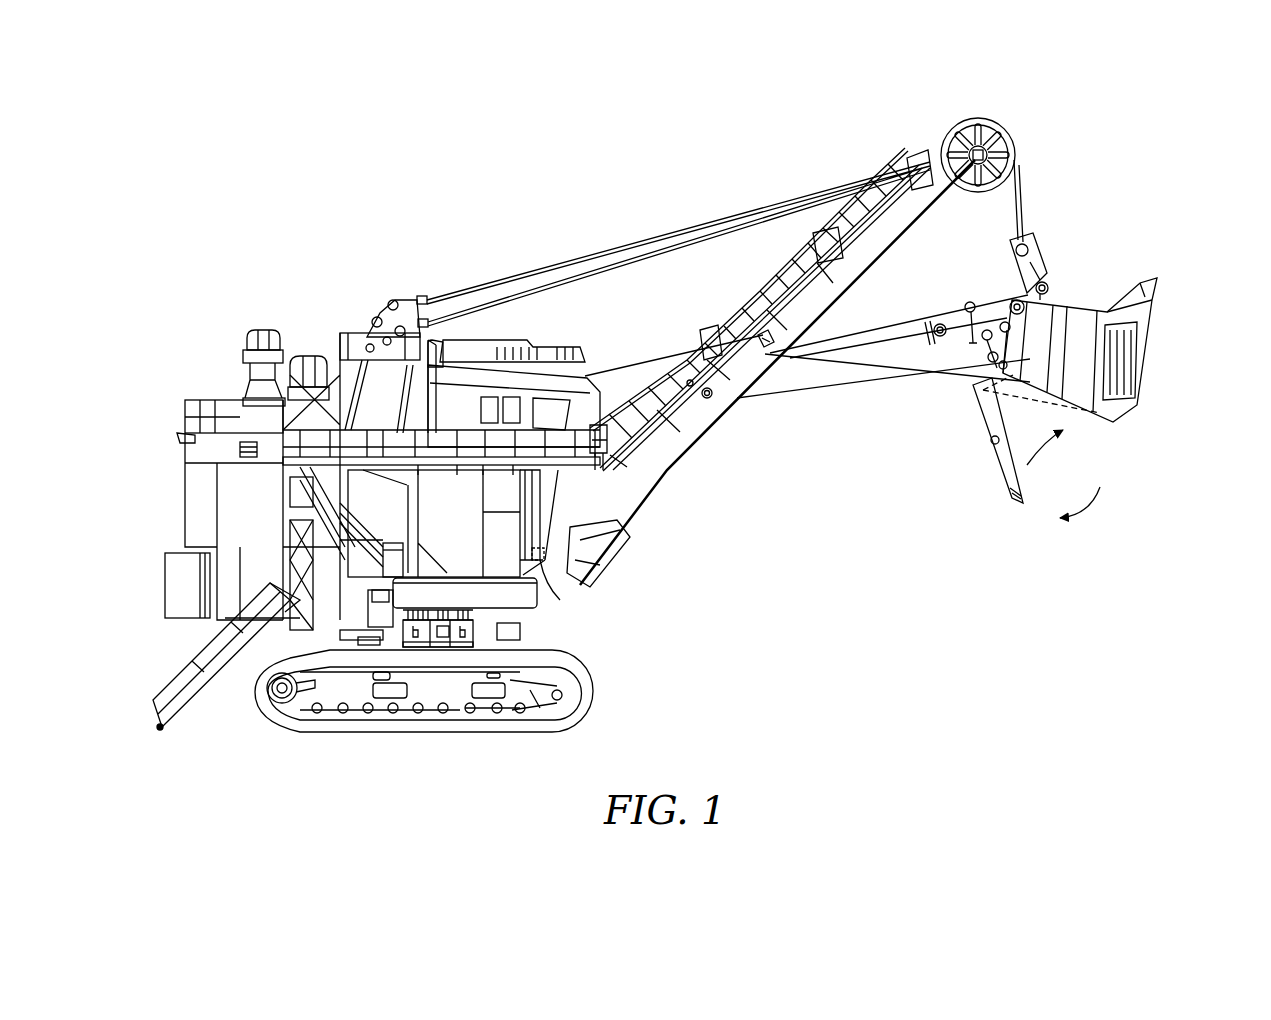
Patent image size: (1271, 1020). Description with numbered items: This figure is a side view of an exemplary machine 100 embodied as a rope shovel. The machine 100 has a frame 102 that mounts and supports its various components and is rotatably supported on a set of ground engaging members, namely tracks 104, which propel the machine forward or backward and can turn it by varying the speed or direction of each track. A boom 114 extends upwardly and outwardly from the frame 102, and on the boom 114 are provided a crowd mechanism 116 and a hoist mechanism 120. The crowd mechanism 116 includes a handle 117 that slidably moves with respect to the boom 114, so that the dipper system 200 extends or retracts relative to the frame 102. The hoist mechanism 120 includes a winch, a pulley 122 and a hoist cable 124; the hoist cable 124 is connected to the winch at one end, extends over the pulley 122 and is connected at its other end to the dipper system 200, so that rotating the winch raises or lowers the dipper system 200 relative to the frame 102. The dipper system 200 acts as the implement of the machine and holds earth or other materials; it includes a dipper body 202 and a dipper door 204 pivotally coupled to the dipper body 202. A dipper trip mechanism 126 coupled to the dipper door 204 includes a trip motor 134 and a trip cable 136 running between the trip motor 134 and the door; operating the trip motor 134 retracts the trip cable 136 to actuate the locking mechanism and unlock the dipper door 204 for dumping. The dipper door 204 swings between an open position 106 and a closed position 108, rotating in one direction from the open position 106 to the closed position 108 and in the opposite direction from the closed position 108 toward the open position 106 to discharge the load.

The machine 100 is at (223, 150).
The frame 102 is at (187, 595).
The tracks 104 is at (580, 675).
The open position 106 is at (997, 500).
The closed position 108 is at (1103, 437).
The boom 114 is at (847, 270).
The crowd mechanism 116 is at (840, 386).
The handle 117 is at (860, 357).
The hoist mechanism 120 is at (1015, 128).
The pulley 122 is at (957, 120).
The hoist cable 124 is at (832, 190).
The dipper trip mechanism 126 is at (770, 362).
The trip motor 134 is at (538, 615).
The trip cable 136 is at (660, 448).
The dipper system 200 is at (1110, 257).
The dipper body 202 is at (1093, 322).
The dipper door 204 is at (990, 418).